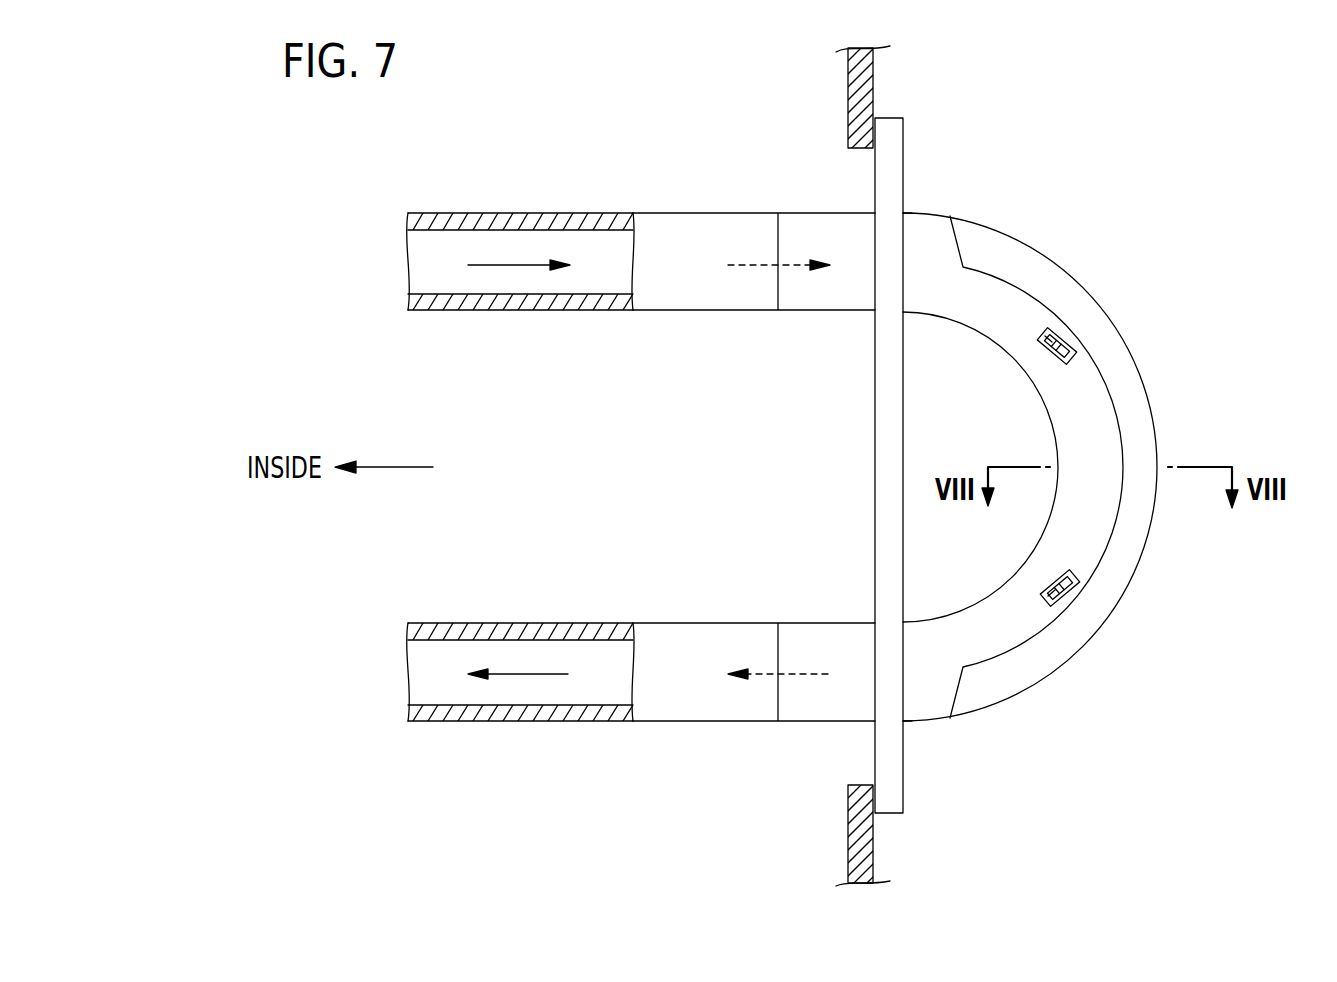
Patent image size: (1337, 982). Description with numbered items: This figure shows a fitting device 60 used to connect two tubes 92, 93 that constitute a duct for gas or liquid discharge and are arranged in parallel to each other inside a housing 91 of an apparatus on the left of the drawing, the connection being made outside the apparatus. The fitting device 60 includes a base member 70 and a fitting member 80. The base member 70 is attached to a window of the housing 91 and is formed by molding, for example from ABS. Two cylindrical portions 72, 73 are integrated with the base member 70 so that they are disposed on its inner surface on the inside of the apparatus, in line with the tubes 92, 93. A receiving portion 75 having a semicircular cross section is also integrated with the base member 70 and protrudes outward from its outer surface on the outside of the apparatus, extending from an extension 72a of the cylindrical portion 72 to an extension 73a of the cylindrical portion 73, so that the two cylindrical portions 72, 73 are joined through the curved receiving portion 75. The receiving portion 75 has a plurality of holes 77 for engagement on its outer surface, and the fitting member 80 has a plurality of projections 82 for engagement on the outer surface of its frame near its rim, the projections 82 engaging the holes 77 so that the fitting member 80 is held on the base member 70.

The fitting device 60 is at (1062, 168).
The base member 70 is at (888, 804).
The cylindrical portion 72 is at (838, 301).
The extension of the cylindrical portion 72a is at (922, 233).
The cylindrical portion 73 is at (831, 642).
The extension of the cylindrical portion 73a is at (922, 711).
The receiving portion 75 is at (1013, 620).
The holes for engagement 77 is at (1047, 338).
The fitting member 80 is at (1128, 395).
The projections for engagement 82 is at (1075, 342).
The housing 91 is at (866, 91).
The tube 92 is at (548, 303).
The tube 93 is at (537, 637).